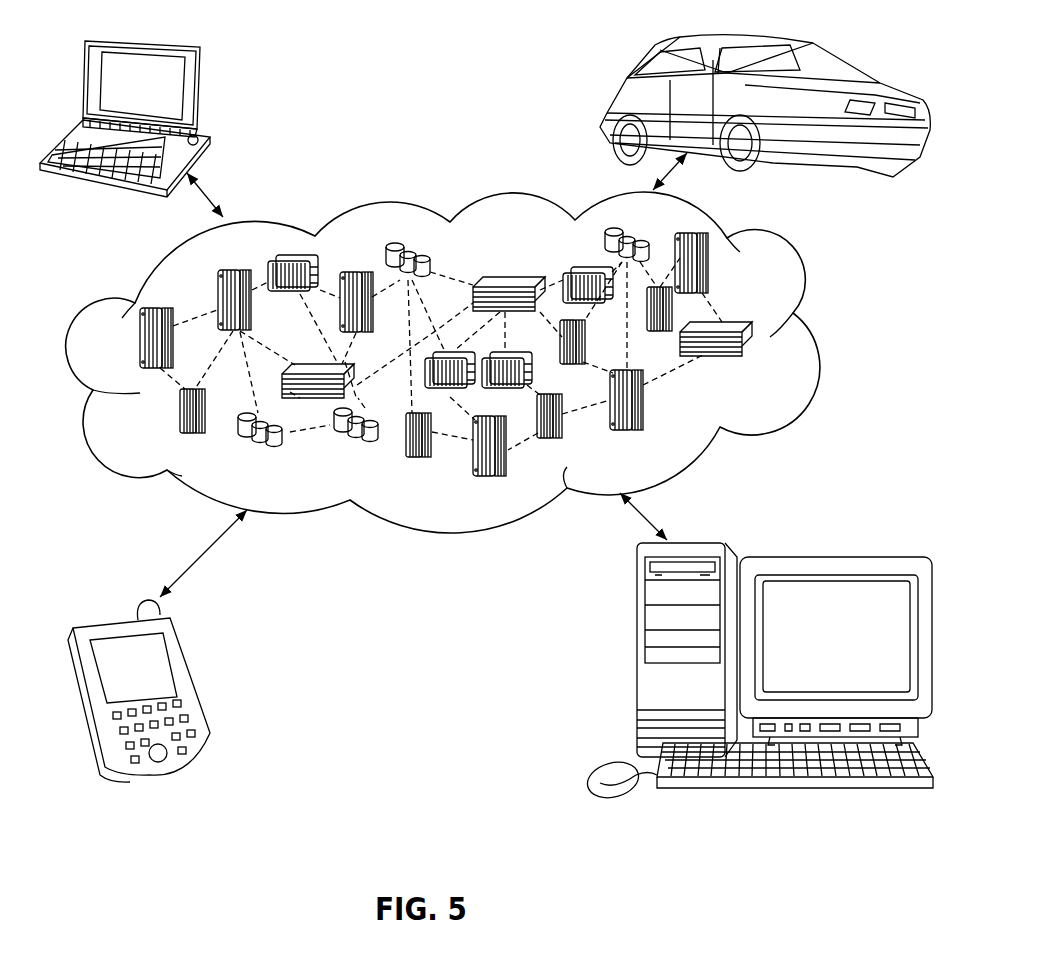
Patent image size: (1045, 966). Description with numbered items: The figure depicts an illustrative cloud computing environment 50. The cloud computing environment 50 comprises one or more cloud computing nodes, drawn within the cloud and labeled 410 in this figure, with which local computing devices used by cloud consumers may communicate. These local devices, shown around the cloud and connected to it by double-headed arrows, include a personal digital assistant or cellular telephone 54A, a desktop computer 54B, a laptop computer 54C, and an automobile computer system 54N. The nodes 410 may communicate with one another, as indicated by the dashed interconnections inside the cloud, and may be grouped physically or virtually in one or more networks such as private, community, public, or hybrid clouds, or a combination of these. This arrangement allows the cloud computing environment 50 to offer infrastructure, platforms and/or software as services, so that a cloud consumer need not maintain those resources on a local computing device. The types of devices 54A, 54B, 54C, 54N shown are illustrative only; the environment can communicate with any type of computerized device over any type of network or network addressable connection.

The cloud computing environment 50 is at (800, 297).
The cloud computing nodes 410 is at (787, 365).
The personal digital assistant (PDA) or cellular telephone 54A is at (193, 680).
The desktop computer 54B is at (637, 662).
The laptop computer 54C is at (200, 85).
The automobile computer system 54N is at (607, 97).